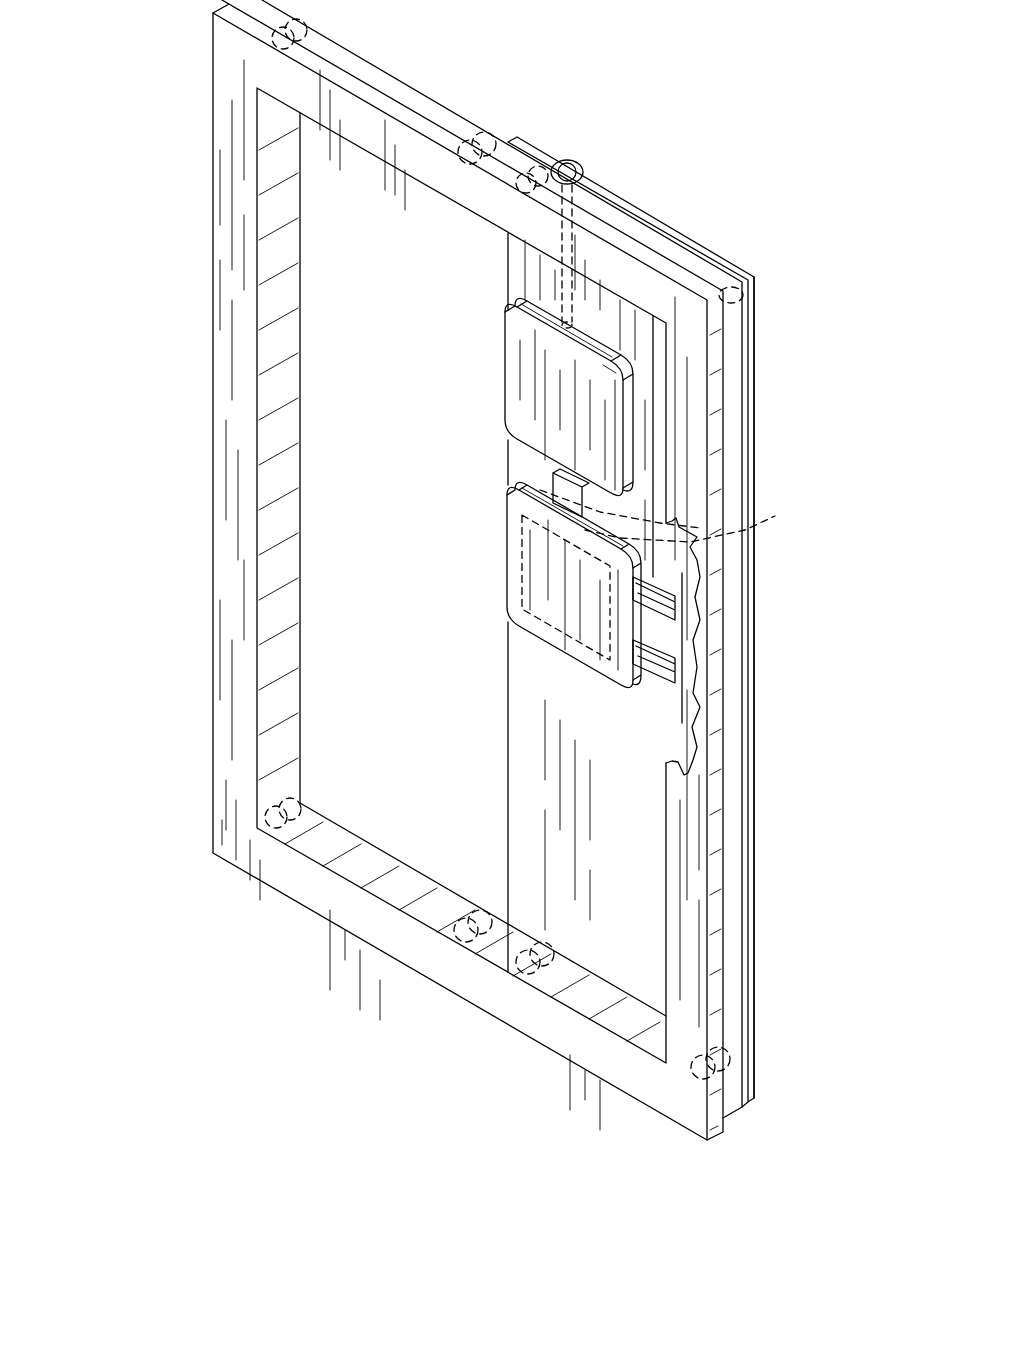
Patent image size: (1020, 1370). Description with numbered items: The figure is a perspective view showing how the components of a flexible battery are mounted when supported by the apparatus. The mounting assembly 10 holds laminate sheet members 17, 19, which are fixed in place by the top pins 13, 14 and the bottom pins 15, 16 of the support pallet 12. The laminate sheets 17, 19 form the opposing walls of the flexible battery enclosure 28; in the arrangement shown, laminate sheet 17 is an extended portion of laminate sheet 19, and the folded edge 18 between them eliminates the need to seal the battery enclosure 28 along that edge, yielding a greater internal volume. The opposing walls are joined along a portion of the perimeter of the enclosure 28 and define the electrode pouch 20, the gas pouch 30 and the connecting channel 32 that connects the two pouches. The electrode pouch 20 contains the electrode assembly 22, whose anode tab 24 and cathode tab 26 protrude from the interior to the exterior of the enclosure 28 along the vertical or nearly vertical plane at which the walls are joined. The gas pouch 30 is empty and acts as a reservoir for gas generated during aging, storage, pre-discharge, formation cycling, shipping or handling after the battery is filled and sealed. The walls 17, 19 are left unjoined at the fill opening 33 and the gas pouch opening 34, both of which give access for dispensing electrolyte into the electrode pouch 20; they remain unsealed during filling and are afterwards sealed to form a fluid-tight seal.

The mounting assembly 10 is at (112, 124).
The support pallet 12 is at (215, 515).
The top pin 13 is at (490, 130).
The top pin 14 is at (728, 290).
The bottom pin 15 is at (530, 955).
The bottom pin 16 is at (716, 1062).
The laminate sheet member 17 is at (632, 213).
The folded edge 18 is at (500, 848).
The laminate sheet member 19 is at (680, 233).
The electrode pouch 20 is at (580, 587).
The electrode assembly 22 is at (550, 627).
The anode tab 24 is at (658, 610).
The cathode tab 26 is at (657, 675).
The flexible battery enclosure 28 is at (452, 420).
The gas pouch 30 is at (597, 423).
The connecting channel 32 is at (586, 503).
The fill opening 33 is at (775, 516).
The gas pouch opening 34 is at (570, 173).